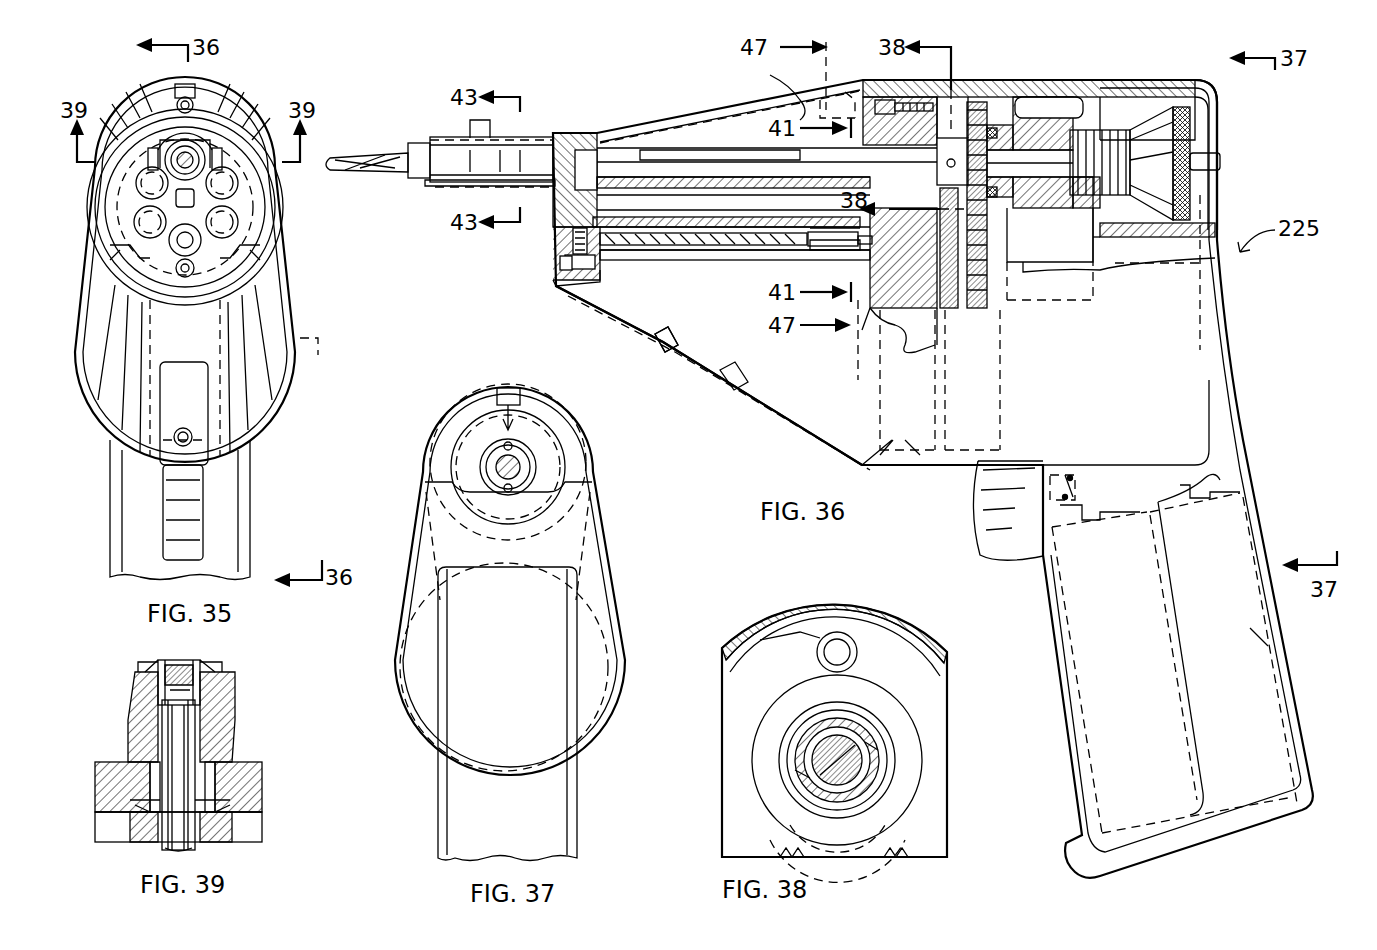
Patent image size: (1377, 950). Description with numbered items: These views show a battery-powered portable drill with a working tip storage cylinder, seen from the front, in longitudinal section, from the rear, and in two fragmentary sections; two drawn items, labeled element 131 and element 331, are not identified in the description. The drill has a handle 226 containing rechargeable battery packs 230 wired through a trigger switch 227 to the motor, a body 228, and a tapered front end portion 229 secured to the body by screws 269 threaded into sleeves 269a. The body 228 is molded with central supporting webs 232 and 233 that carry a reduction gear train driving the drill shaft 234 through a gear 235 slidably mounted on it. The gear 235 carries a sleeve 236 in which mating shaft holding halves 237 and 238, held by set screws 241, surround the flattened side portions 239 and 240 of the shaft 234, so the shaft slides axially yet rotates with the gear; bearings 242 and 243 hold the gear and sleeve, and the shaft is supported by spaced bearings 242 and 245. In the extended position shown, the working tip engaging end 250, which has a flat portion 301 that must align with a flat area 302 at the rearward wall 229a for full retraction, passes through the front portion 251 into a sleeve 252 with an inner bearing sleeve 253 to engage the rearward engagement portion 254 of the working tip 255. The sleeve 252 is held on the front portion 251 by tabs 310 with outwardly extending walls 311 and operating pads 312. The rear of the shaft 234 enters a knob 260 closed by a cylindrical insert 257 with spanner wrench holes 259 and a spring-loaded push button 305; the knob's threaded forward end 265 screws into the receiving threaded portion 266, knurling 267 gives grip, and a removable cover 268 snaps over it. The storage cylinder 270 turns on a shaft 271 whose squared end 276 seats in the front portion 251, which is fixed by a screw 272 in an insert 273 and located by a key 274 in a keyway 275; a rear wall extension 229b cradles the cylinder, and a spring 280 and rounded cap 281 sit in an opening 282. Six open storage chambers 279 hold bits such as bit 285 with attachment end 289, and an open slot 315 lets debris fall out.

In FIG. 36, the battery pack 131 is at (1205, 312).
In FIG. 35, the handle 226 is at (112, 567).
In FIG. 36, the handle 226 is at (1262, 513).
In FIG. 37, the handle 226 is at (560, 782).
In FIG. 35, the trigger switch 227 is at (172, 548).
In FIG. 36, the trigger switch 227 is at (1000, 505).
In FIG. 36, the body 228 is at (960, 480).
In FIG. 37, the body 228 is at (580, 530).
In FIG. 38, the body 228 is at (885, 612).
In FIG. 35, the tapered front end portion 229 is at (265, 320).
In FIG. 36, the tapered front end portion 229 is at (660, 350).
In FIG. 36, the rearward wall 229a is at (820, 255).
In FIG. 38, the rearward wall 229a is at (900, 800).
In FIG. 36, the rear wall extension 229b is at (820, 250).
In FIG. 36, the rechargeable battery packs 230 is at (1257, 638).
In FIG. 36, the central supporting web 232 is at (1020, 275).
In FIG. 36, the central supporting web 233 is at (870, 330).
In FIG. 36, the drill shaft 234 is at (640, 150).
In FIG. 38, the drill shaft 234 is at (815, 780).
In FIG. 39, the drill shaft 234 is at (196, 712).
In FIG. 36, the gear 235 is at (995, 212).
In FIG. 36, the sleeve 236 is at (985, 140).
In FIG. 38, the sleeve 236 is at (875, 775).
In FIG. 38, the shaft holding half 237 is at (805, 750).
In FIG. 38, the shaft holding half 238 is at (880, 725).
In FIG. 39, the shaft holding half 238 is at (200, 850).
In FIG. 36, the flattened side portion 239 is at (680, 150).
In FIG. 38, the flattened side portion 239 is at (800, 775).
In FIG. 39, the flattened side portion 239 is at (195, 760).
In FIG. 38, the flattened side portion 240 is at (880, 745).
In FIG. 36, the set screws 241 is at (1010, 145).
In FIG. 38, the set screws 241 is at (885, 760).
In FIG. 36, the bearing 242 is at (950, 140).
In FIG. 38, the bearing 242 is at (815, 745).
In FIG. 36, the bearing 243 is at (1000, 200).
In FIG. 36, the bearing 245 is at (1035, 140).
In FIG. 36, the working tip engaging end 250 is at (495, 148).
In FIG. 39, the working tip engaging end 250 is at (158, 668).
In FIG. 35, the front portion 251 is at (120, 180).
In FIG. 36, the front portion 251 is at (565, 130).
In FIG. 39, the front portion 251 is at (100, 768).
In FIG. 35, the sleeve 252 is at (195, 140).
In FIG. 36, the sleeve 252 is at (450, 192).
In FIG. 39, the sleeve 252 is at (222, 675).
In FIG. 35, the inner bearing sleeve 253 is at (205, 145).
In FIG. 36, the inner bearing sleeve 253 is at (440, 185).
In FIG. 39, the inner bearing sleeve 253 is at (206, 672).
In FIG. 36, the rearward engagement portion 254 is at (420, 148).
In FIG. 35, the working tip 255 is at (180, 140).
In FIG. 36, the working tip 255 is at (390, 150).
In FIG. 37, the cylindrical insert 257 is at (536, 470).
In FIG. 37, the spanner wrench holes 259 is at (504, 446).
In FIG. 36, the knob 260 is at (1215, 108).
In FIG. 37, the knob 260 is at (452, 437).
In FIG. 36, the forward end of knob 265 is at (1130, 95).
In FIG. 36, the receiving threaded portion 266 is at (1095, 230).
In FIG. 36, the knurling 267 is at (1192, 130).
In FIG. 36, the removable cover 268 is at (1197, 88).
In FIG. 37, the removable cover 268 is at (540, 400).
In FIG. 35, the screws 269 is at (188, 103).
In FIG. 36, the screws 269 is at (860, 468).
In FIG. 38, the screws 269 is at (838, 632).
In FIG. 36, the sleeves 269a is at (905, 470).
In FIG. 38, the sleeves 269a is at (790, 640).
In FIG. 36, the working tip storage cylinder 270 is at (710, 260).
In FIG. 39, the working tip storage cylinder 270 is at (110, 828).
In FIG. 36, the shaft 271 is at (755, 165).
In FIG. 35, the screw 272 is at (200, 278).
In FIG. 36, the screw 272 is at (620, 270).
In FIG. 36, the insert 273 is at (585, 300).
In FIG. 35, the key 274 is at (222, 252).
In FIG. 35, the keyway 275 is at (240, 228).
In FIG. 35, the squared end 276 is at (196, 198).
In FIG. 36, the squared end 276 is at (575, 194).
In FIG. 36, the cylindrical storage chambers 279 is at (725, 248).
In FIG. 39, the cylindrical storage chambers 279 is at (250, 828).
In FIG. 36, the spring 280 is at (566, 262).
In FIG. 36, the rounded cap 281 is at (560, 270).
In FIG. 36, the opening 282 is at (572, 236).
In FIG. 36, the bit 285 is at (690, 247).
In FIG. 36, the attachment end 289 is at (862, 242).
In FIG. 36, the flat portion 301 is at (515, 180).
In FIG. 39, the flat portion 301 is at (172, 662).
In FIG. 36, the flat area 302 is at (760, 108).
In FIG. 36, the push button 305 is at (1222, 160).
In FIG. 37, the push button 305 is at (520, 462).
In FIG. 39, the tabs 310 is at (142, 800).
In FIG. 39, the outwardly extending walls 311 is at (140, 805).
In FIG. 35, the operating pads 312 is at (148, 155).
In FIG. 39, the operating pads 312 is at (140, 725).
In FIG. 35, the open slot 315 is at (205, 428).
In FIG. 36, the open slot 315 is at (728, 385).
In FIG. 37, the pointer 331 is at (500, 410).